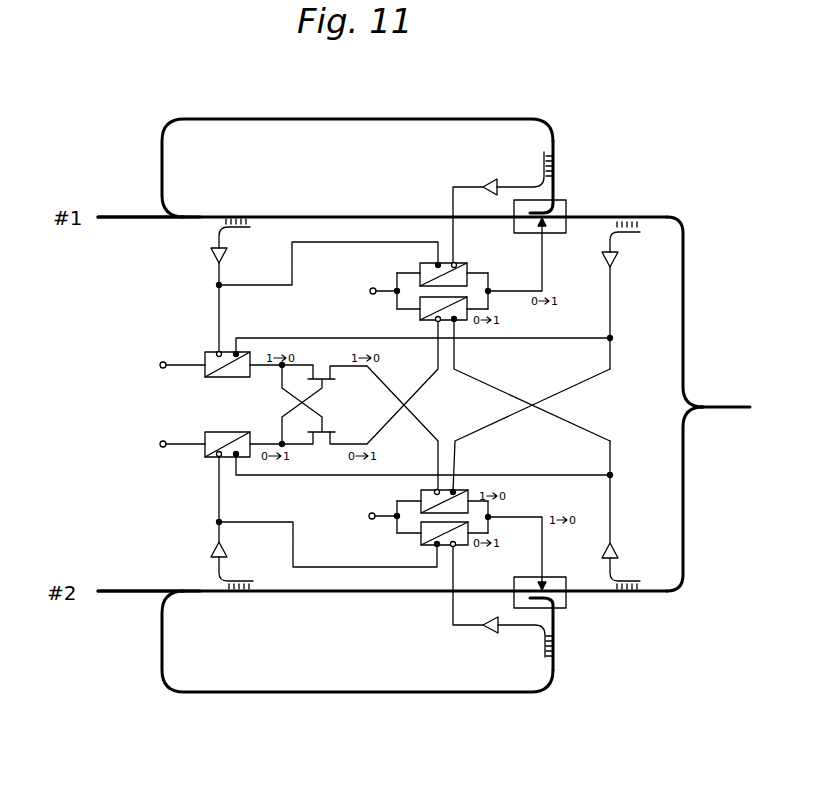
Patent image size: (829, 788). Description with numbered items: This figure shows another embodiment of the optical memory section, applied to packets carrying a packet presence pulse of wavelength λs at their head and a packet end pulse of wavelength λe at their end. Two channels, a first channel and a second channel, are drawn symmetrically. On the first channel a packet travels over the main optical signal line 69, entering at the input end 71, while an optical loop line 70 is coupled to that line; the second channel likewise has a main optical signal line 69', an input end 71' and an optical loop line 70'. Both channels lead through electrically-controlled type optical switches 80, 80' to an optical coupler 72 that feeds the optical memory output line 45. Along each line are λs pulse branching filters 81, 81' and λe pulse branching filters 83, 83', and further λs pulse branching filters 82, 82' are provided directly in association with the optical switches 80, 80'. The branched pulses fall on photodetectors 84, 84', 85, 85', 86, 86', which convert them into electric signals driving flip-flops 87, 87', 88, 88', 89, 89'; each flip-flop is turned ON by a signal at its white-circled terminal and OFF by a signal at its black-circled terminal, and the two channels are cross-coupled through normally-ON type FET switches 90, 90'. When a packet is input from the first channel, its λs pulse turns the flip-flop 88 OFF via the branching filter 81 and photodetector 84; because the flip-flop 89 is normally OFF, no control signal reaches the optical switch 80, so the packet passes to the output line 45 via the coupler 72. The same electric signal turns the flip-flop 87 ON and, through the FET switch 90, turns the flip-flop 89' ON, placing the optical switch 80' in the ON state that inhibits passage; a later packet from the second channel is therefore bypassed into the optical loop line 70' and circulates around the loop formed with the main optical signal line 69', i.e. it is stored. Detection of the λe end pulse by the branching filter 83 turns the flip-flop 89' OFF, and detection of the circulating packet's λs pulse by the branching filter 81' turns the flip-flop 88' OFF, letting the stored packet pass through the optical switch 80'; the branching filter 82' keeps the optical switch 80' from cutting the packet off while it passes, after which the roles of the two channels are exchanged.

The optical memory output line 45 is at (737, 412).
The main optical signal line 69 is at (382, 194).
The main optical signal line 69' is at (382, 616).
The optical loop line 70 is at (357, 147).
The optical loop line 70' is at (357, 667).
The input port of line #1 71 is at (149, 242).
The input port of line #2 71' is at (149, 574).
The optical coupler 72 is at (697, 418).
The electrically-controlled type optical switch 80 is at (548, 232).
The electrically-controlled type optical switch 80' is at (553, 574).
The λs pulse branching filter 81 is at (234, 211).
The λs pulse branching filter 81' is at (238, 599).
The λs pulse branching filter 82 is at (552, 163).
The λs pulse branching filter 82' is at (553, 655).
The λe pulse branching filter 83 is at (632, 214).
The λe pulse branching filter 83' is at (644, 598).
The photodetector 84 is at (297, 298).
The photodetector 84' is at (296, 512).
The photodetector 85 is at (475, 203).
The photodetector 85' is at (475, 611).
The photodetector 86 is at (625, 310).
The photodetector 86' is at (625, 499).
The flip-flop 87 is at (220, 376).
The flip-flop 87' is at (220, 433).
The flip-flop 88 is at (442, 257).
The flip-flop 88' is at (444, 554).
The flip-flop 89 is at (445, 334).
The flip-flop 89' is at (454, 479).
The normally-ON type FET switch 90 is at (327, 404).
The normally-ON type FET switch 90' is at (330, 404).